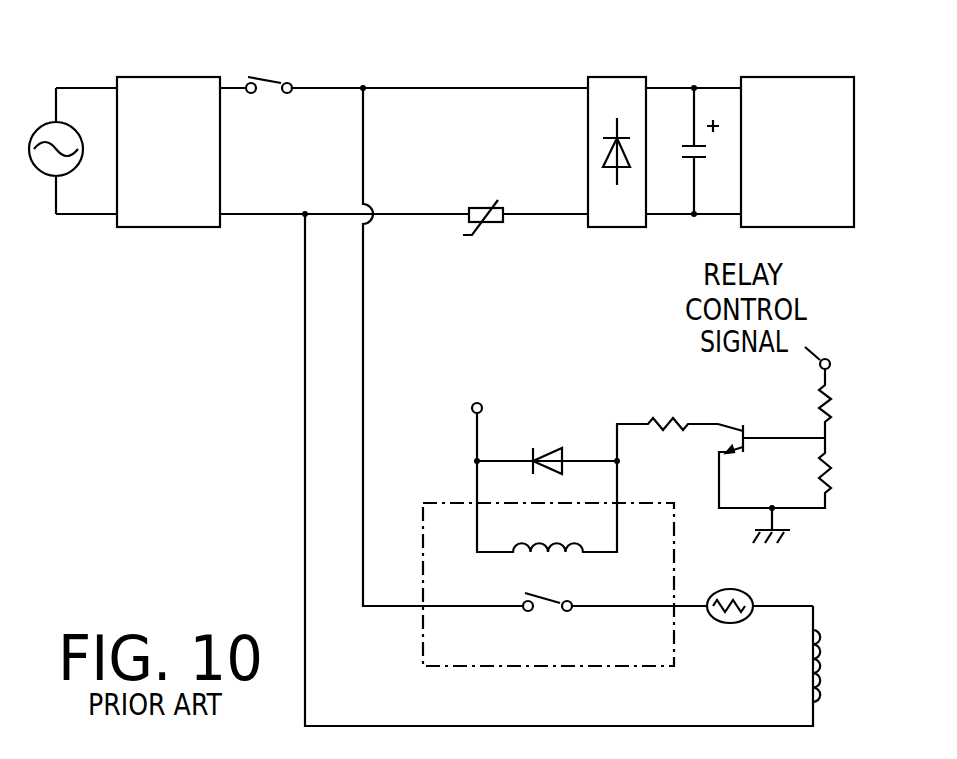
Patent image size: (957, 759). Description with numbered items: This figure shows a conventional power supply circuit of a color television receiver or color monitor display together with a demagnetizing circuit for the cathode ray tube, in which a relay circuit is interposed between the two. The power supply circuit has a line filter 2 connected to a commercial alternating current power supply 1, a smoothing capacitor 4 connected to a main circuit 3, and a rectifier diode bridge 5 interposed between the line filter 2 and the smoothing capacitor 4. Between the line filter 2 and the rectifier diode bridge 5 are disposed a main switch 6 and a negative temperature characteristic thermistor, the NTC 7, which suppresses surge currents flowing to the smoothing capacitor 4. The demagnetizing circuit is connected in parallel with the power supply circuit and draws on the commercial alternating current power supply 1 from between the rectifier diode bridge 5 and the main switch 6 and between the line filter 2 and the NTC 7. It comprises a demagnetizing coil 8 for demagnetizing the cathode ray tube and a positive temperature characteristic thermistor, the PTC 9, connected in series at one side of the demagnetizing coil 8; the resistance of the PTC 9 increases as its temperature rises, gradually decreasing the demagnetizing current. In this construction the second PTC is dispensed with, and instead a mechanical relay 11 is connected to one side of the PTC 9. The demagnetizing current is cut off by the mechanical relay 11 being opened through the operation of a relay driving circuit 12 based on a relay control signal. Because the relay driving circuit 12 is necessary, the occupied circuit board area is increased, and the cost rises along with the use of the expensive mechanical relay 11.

The commercial alternating current power supply 1 is at (50, 123).
The line filter 2 is at (192, 76).
The main circuit 3 is at (791, 75).
The smoothing capacitor 4 is at (687, 145).
The rectifier diode bridge 5 is at (617, 75).
The main switch 6 is at (271, 78).
The negative temperature characteristic thermistor (NTC) 7 is at (484, 206).
The demagnetizing coil 8 is at (823, 655).
The positive temperature characteristic thermistor (PTC) 9 is at (728, 627).
The mechanical relay 11 is at (541, 597).
The relay driving circuit 12 is at (654, 400).